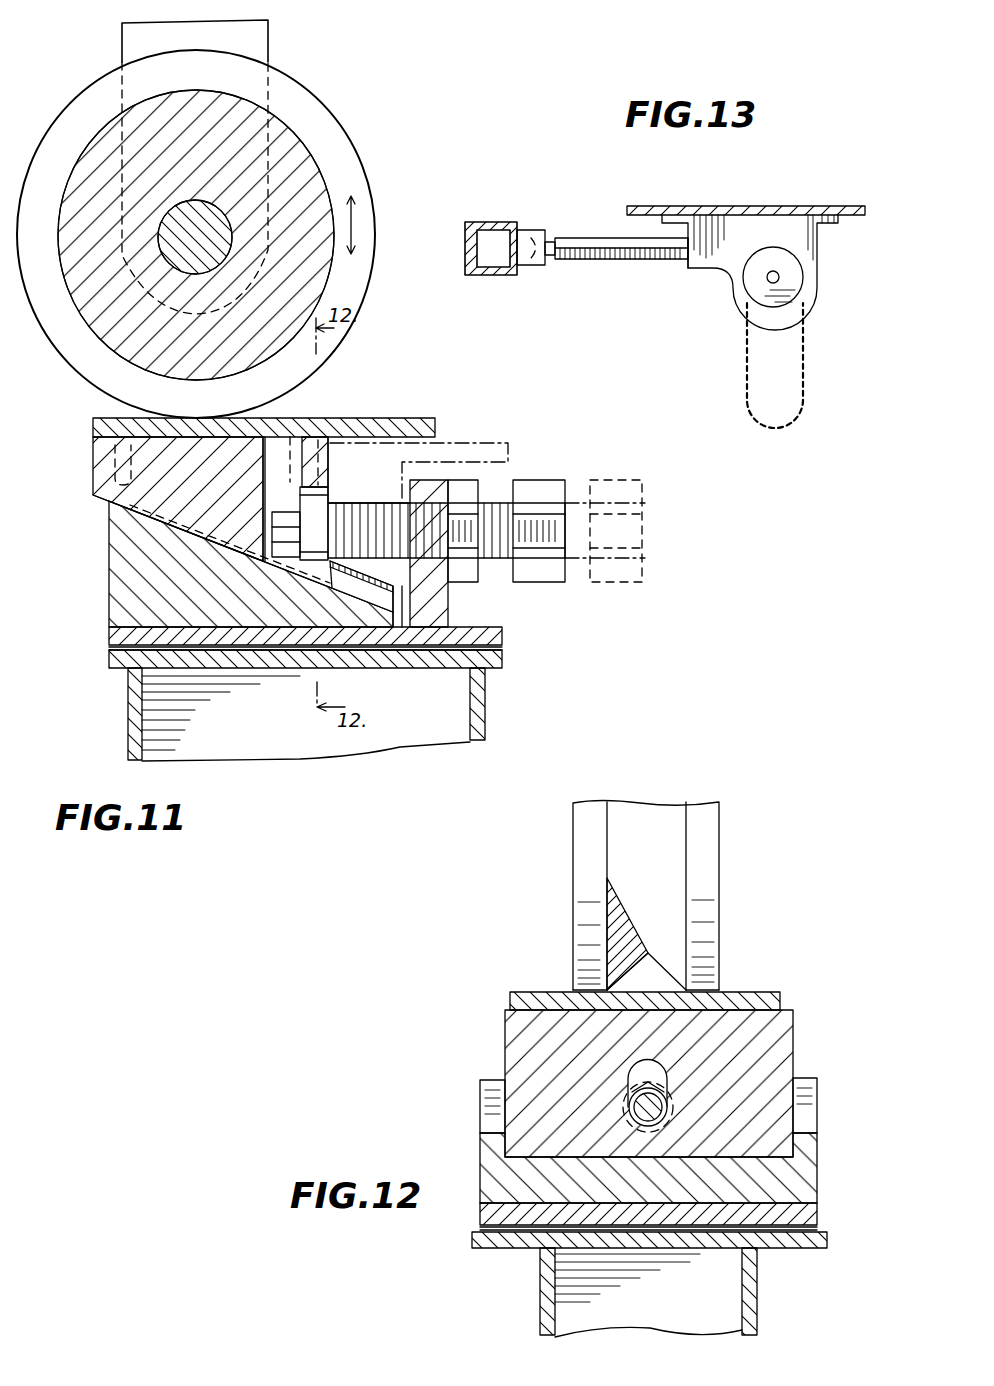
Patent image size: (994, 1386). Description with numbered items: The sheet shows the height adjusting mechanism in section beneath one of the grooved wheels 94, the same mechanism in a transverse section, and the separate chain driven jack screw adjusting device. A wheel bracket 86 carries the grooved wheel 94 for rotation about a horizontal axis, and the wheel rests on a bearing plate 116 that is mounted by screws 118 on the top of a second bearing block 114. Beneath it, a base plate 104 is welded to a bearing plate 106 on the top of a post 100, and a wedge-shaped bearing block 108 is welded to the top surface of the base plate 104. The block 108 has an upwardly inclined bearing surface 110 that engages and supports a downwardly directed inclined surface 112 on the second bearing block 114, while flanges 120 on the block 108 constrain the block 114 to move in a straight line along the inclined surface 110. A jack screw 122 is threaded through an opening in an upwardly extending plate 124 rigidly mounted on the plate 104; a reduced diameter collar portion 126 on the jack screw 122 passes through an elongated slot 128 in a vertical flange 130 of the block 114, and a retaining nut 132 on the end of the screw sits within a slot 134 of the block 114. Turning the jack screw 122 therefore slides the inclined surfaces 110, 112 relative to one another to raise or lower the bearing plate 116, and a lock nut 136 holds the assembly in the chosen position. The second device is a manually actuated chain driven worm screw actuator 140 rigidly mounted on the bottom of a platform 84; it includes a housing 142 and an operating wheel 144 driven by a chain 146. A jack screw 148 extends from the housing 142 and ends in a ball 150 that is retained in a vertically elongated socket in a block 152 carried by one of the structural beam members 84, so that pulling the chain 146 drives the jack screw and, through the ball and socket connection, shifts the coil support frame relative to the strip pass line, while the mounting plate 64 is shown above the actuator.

In FIG. 13, the mounting plate 64 is at (788, 206).
In FIG. 13, the platform 84 is at (508, 276).
In FIG. 11, the wheel bracket 86 is at (268, 37).
In FIG. 11, the grooved wheel 94 is at (358, 186).
In FIG. 12, the grooved wheel 94 is at (700, 835).
In FIG. 11, the post 100 is at (486, 712).
In FIG. 12, the post 100 is at (758, 1300).
In FIG. 11, the base plate 104 is at (502, 632).
In FIG. 12, the base plate 104 is at (817, 1216).
In FIG. 11, the bearing plate 106 is at (504, 660).
In FIG. 12, the bearing plate 106 is at (826, 1248).
In FIG. 11, the wedge-shaped bearing block 108 is at (109, 590).
In FIG. 12, the wedge-shaped bearing block 108 is at (800, 1165).
In FIG. 11, the inclined bearing surface 110 is at (385, 595).
In FIG. 11, the inclined surface 112 is at (100, 500).
In FIG. 11, the second bearing block 114 is at (94, 465).
In FIG. 12, the second bearing block 114 is at (792, 1010).
In FIG. 11, the bearing plate 116 is at (95, 428).
In FIG. 11, the screws 118 is at (120, 425).
In FIG. 12, the screws 118 is at (742, 992).
In FIG. 12, the flanges 120 is at (480, 1092).
In FIG. 11, the jack screw 122 is at (545, 490).
In FIG. 11, the upwardly extending plate 124 is at (449, 604).
In FIG. 11, the reduced diameter collar portion 126 is at (318, 505).
In FIG. 11, the elongated slot 128 is at (312, 492).
In FIG. 12, the elongated slot 128 is at (670, 1095).
In FIG. 11, the vertical flange 130 is at (335, 440).
In FIG. 11, the retaining nut 132 is at (300, 528).
In FIG. 11, the slot 134 is at (272, 450).
In FIG. 11, the lock nut 136 is at (463, 495).
In FIG. 13, the chain driven worm screw actuator 140 is at (842, 259).
In FIG. 13, the housing 142 is at (718, 268).
In FIG. 13, the operating wheel 144 is at (800, 290).
In FIG. 13, the chain 146 is at (806, 382).
In FIG. 13, the jack screw 148 is at (630, 260).
In FIG. 13, the ball 150 is at (550, 240).
In FIG. 13, the block 152 is at (530, 266).